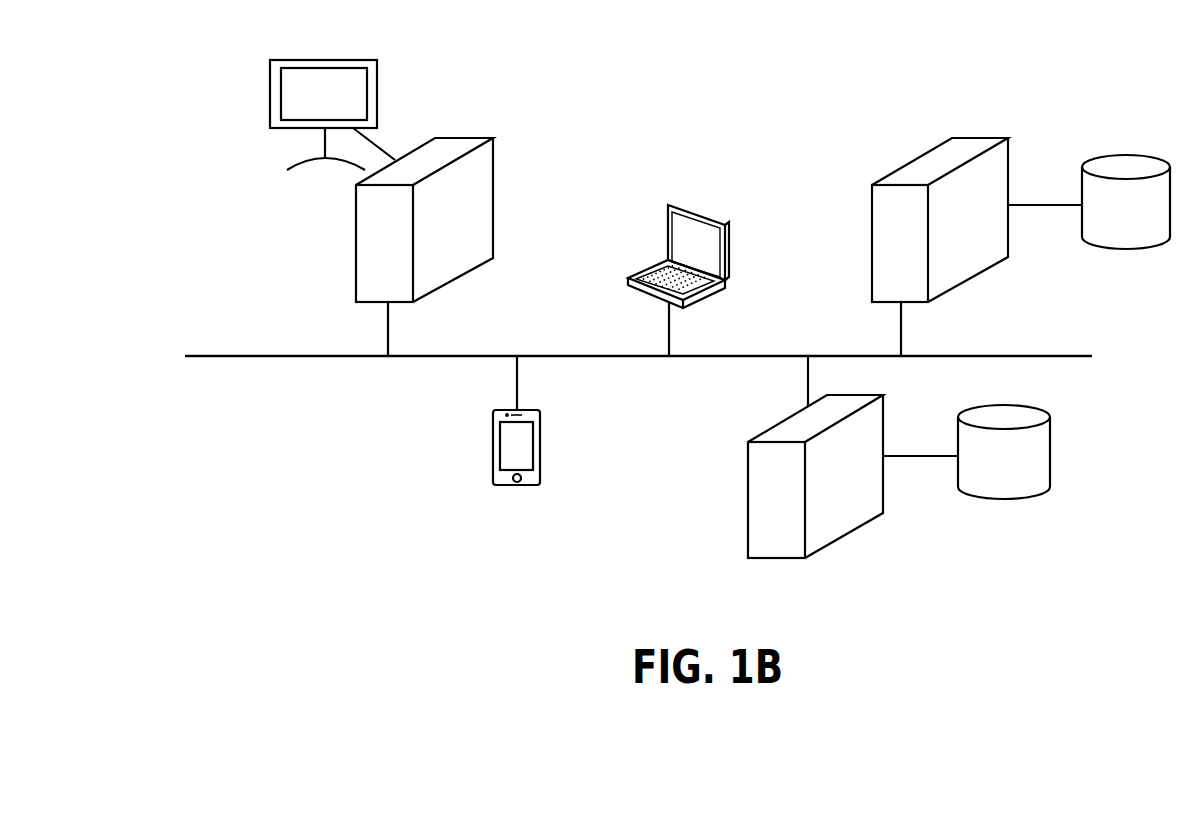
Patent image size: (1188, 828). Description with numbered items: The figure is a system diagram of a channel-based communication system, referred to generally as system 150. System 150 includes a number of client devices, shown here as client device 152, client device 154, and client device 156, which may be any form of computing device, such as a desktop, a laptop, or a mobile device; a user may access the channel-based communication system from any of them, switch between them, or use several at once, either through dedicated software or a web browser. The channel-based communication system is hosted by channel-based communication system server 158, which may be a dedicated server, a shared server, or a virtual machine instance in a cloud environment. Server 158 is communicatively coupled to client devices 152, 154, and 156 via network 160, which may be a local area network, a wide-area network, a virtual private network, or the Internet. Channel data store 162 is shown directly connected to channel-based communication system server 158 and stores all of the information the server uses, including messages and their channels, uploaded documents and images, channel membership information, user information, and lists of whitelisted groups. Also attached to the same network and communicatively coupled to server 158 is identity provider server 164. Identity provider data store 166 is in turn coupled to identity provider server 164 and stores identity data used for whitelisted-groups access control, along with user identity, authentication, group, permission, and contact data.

The system 150 is at (203, 547).
The client device 152 is at (356, 247).
The client device 154 is at (668, 241).
The client device 156 is at (540, 448).
The channel-based communication system server 158 is at (748, 513).
The network 160 is at (227, 357).
The channel data store 162 is at (1005, 500).
The identity provider server 164 is at (872, 219).
The identity provider data store 166 is at (1130, 250).